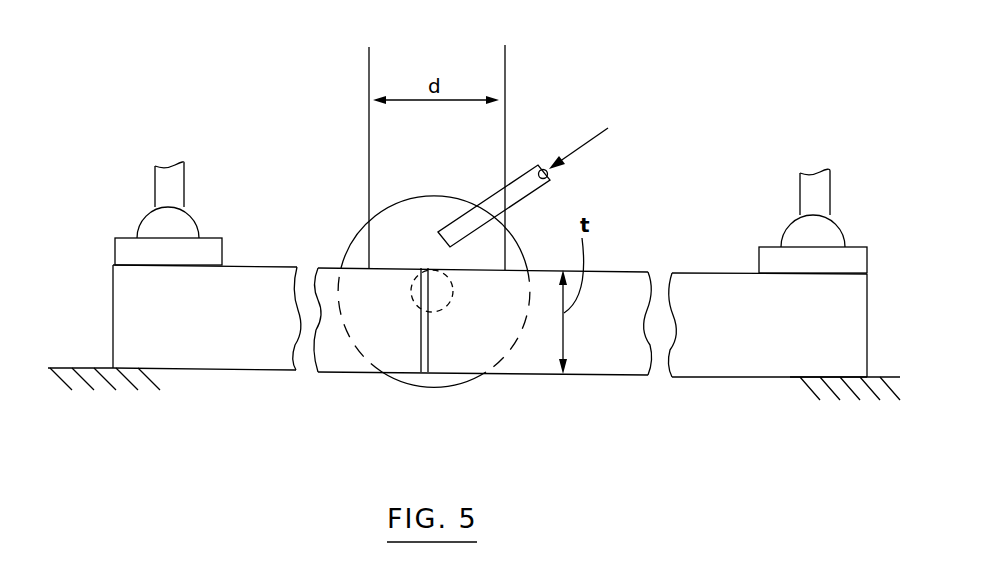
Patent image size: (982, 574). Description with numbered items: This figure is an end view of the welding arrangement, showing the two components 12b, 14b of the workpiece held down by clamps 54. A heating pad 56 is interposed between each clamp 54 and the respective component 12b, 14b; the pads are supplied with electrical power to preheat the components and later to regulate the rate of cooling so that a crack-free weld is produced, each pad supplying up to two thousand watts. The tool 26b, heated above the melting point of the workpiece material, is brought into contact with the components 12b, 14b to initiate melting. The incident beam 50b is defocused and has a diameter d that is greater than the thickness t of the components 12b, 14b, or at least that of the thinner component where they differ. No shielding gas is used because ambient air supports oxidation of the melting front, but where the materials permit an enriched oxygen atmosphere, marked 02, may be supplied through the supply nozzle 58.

The incident beam 50b is at (523, 52).
The supply nozzle 58 is at (518, 178).
The gas flow direction arrow 02 is at (583, 147).
The tool 26b is at (343, 246).
The component 14b is at (600, 360).
The component 12b is at (130, 317).
The heating pad 56 is at (125, 250).
The clamp 54 is at (158, 193).